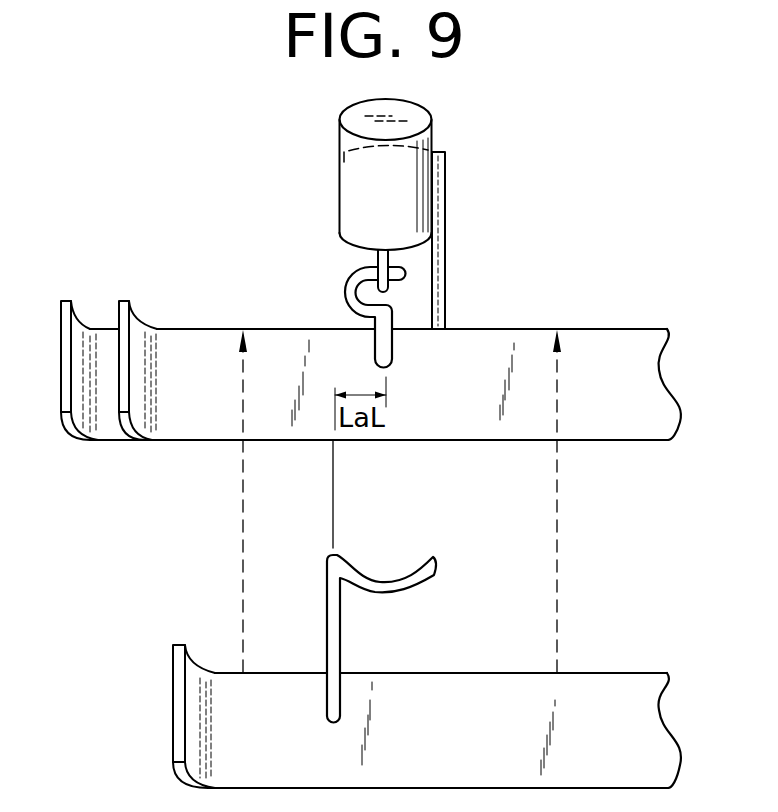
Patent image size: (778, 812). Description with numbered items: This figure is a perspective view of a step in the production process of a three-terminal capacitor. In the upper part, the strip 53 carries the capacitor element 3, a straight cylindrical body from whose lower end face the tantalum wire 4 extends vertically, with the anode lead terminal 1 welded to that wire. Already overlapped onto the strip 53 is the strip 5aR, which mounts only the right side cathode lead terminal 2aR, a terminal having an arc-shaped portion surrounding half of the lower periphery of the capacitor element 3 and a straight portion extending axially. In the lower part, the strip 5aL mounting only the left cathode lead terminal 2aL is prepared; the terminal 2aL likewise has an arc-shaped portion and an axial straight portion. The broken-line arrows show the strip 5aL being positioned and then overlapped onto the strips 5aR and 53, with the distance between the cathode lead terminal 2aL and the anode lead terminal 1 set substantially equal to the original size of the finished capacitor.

The anode lead terminal 1 is at (350, 292).
The capacitor element 3 is at (353, 191).
The tantalum wire 4 is at (378, 260).
The right side cathode lead terminal 2aR is at (445, 243).
The left side cathode lead terminal 2aL is at (373, 583).
The strip 5aR is at (87, 327).
The strip 5aL is at (220, 682).
The strip 53 is at (185, 338).